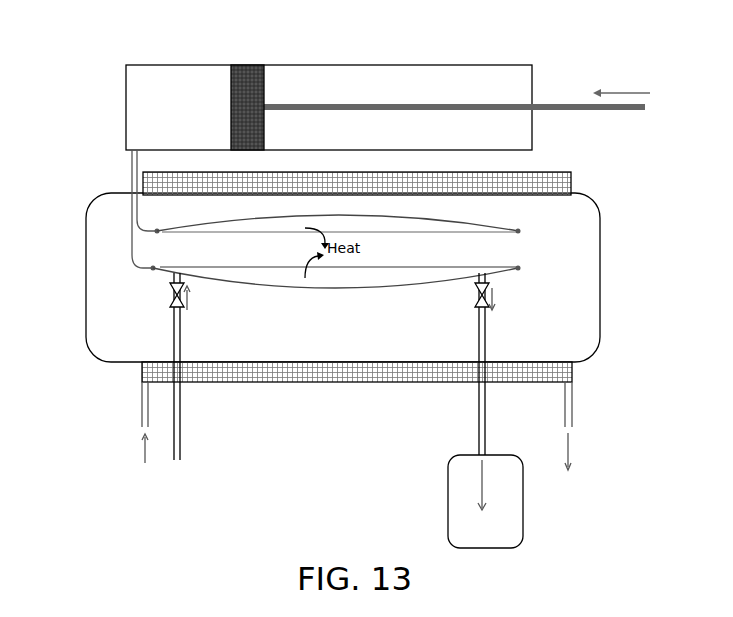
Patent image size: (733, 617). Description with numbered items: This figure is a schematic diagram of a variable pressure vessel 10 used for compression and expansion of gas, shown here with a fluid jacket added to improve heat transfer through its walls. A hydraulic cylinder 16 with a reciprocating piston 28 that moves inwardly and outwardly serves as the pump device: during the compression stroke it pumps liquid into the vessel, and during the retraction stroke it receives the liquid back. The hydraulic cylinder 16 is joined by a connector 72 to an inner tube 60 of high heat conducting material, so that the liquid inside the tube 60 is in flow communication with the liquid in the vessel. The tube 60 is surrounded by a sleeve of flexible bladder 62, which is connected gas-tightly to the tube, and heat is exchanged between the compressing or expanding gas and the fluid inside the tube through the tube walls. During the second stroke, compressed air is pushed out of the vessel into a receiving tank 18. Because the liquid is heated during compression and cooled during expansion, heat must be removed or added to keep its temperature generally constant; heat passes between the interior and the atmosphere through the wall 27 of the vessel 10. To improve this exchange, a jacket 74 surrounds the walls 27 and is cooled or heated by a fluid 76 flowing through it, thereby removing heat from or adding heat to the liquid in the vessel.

The variable pressure vessel 10 is at (587, 357).
The hydraulic cylinder 16 is at (507, 65).
The receiving tank 18 is at (523, 518).
The wall 27 is at (523, 193).
The reciprocating piston 28 is at (267, 77).
The tube 60 is at (343, 267).
The flexible bladder 62 is at (302, 287).
The connector 72 is at (128, 223).
The jacket 74 is at (392, 383).
The fluid 76 is at (140, 400).